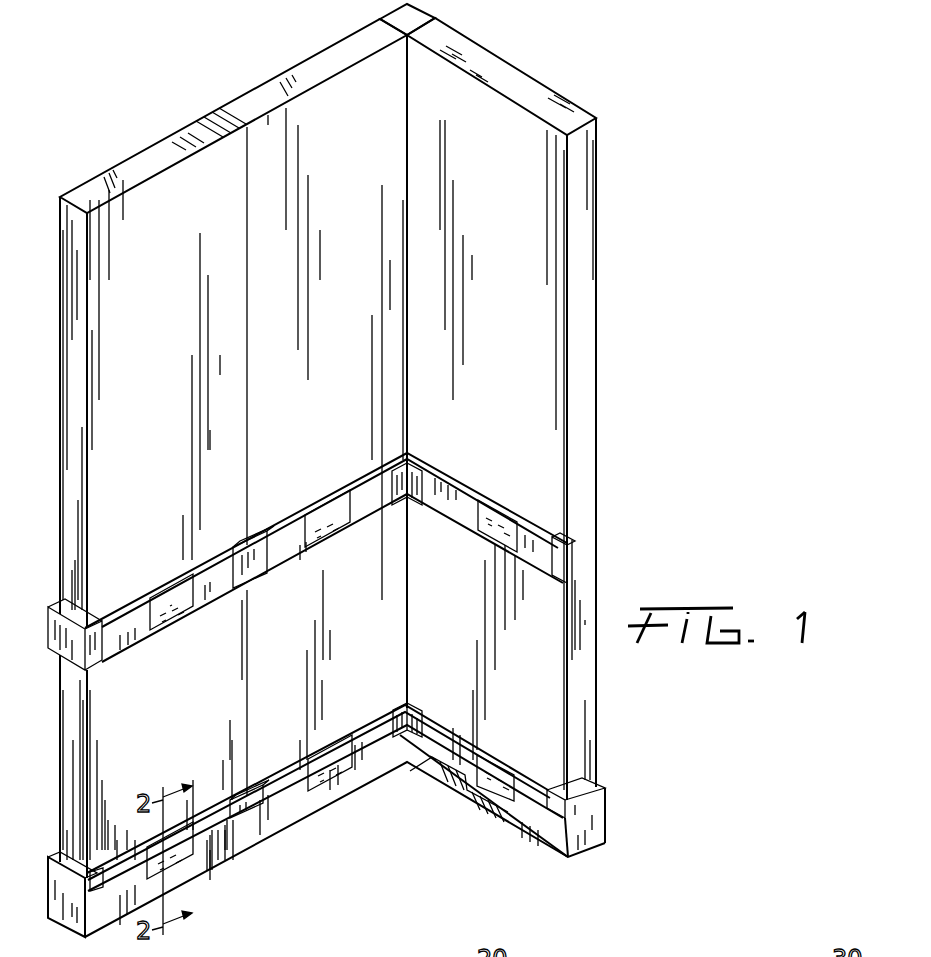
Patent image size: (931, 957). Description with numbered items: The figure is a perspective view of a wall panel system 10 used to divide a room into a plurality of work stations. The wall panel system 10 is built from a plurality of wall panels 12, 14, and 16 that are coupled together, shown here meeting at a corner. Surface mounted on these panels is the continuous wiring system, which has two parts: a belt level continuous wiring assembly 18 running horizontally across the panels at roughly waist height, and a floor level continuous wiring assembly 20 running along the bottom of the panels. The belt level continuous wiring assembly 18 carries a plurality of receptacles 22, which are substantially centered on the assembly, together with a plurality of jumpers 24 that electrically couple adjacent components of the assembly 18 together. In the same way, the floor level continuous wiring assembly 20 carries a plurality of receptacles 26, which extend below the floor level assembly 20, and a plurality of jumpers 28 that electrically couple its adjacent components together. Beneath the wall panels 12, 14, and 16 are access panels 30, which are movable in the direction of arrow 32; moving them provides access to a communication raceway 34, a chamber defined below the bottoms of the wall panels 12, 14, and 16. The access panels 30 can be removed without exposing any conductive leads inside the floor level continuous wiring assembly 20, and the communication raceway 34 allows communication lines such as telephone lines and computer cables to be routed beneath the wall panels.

The wall panel system 10 is at (130, 72).
The wall panel 12 is at (152, 208).
The wall panel 14 is at (332, 104).
The wall panel 16 is at (490, 108).
The belt level continuous wiring assembly 18 is at (510, 508).
The floor level continuous wiring assembly 20 is at (552, 791).
The receptacles 22 is at (335, 495).
The jumpers 24 is at (403, 494).
The receptacles 26 is at (185, 832).
The jumpers 28 is at (250, 793).
The access panels 30 is at (240, 831).
The arrow 32 is at (545, 828).
The communication raceway 34 is at (568, 857).